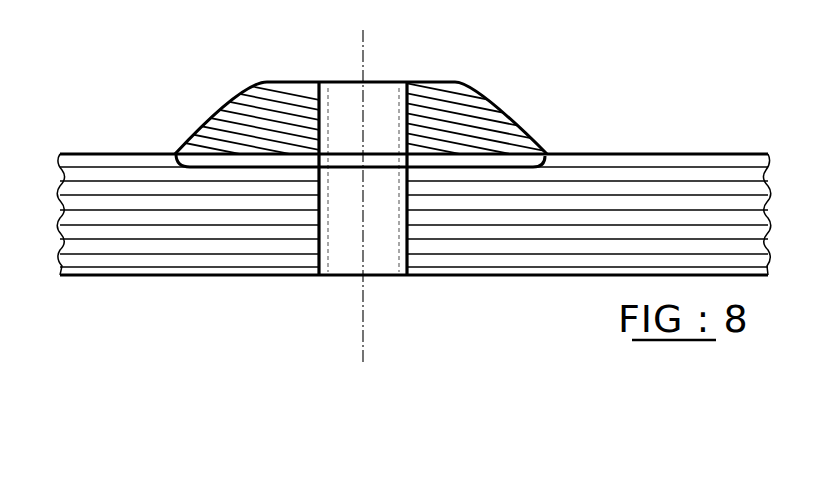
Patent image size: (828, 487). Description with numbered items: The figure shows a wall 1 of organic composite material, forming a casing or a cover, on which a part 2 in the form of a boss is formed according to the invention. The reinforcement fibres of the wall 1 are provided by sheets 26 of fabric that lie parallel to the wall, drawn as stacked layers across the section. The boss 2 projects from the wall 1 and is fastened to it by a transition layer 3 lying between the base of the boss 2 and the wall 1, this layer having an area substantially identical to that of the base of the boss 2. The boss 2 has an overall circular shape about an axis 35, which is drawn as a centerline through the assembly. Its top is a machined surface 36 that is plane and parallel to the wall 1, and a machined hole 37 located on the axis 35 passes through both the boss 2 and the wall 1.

The wall 1 is at (706, 153).
The boss 2 is at (517, 102).
The transition layer 3 is at (540, 142).
The sheets of fabric 26 is at (619, 222).
The axis 35 is at (363, 40).
The machined surface 36 is at (430, 82).
The machined hole 37 is at (339, 136).